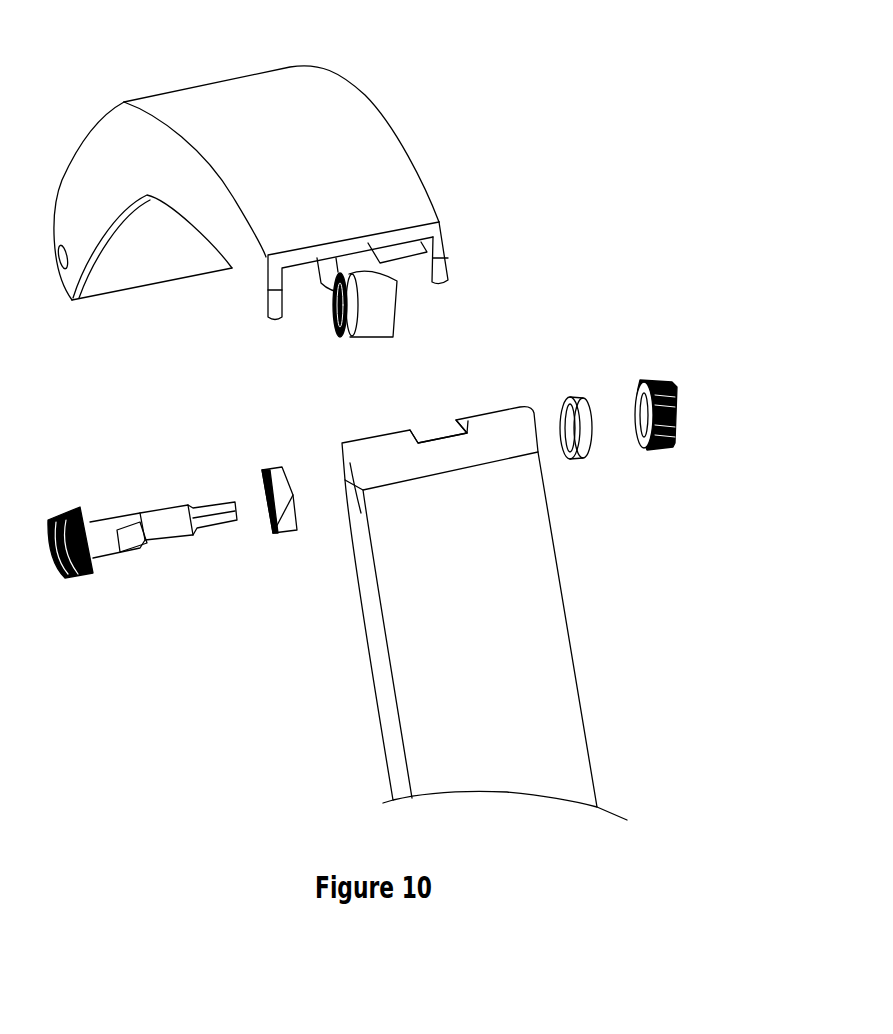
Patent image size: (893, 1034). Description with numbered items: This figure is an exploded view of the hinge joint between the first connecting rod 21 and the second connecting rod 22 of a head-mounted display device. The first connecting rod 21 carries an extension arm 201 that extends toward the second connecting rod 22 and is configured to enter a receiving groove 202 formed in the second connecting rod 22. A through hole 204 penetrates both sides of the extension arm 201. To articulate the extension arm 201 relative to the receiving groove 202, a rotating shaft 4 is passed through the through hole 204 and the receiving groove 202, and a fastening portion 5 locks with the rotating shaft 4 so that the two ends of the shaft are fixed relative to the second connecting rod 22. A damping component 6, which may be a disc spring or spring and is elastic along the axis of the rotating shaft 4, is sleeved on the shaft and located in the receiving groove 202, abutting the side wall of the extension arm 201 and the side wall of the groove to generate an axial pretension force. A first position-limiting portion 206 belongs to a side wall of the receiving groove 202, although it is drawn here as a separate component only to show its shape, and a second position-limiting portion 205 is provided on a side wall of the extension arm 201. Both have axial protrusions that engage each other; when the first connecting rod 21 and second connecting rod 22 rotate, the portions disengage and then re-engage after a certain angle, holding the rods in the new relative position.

The first connecting rod 21 is at (327, 90).
The extension arm 201 is at (387, 315).
The receiving groove 202 is at (433, 433).
The through hole 204 is at (340, 303).
The second position-limiting portion 205 is at (347, 335).
The first position-limiting portion 206 is at (272, 535).
The rotating shaft 4 is at (150, 518).
The fastening portion 5 is at (683, 403).
The damping component 6 is at (575, 392).
The second connecting rod 22 is at (545, 597).